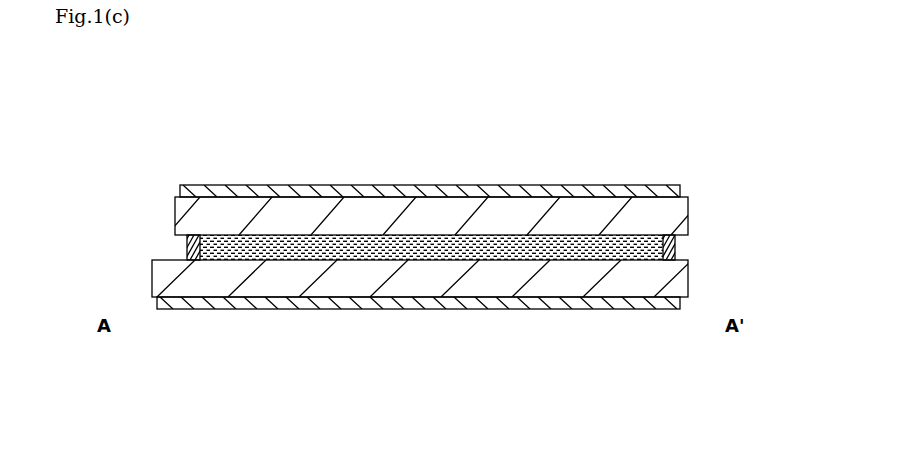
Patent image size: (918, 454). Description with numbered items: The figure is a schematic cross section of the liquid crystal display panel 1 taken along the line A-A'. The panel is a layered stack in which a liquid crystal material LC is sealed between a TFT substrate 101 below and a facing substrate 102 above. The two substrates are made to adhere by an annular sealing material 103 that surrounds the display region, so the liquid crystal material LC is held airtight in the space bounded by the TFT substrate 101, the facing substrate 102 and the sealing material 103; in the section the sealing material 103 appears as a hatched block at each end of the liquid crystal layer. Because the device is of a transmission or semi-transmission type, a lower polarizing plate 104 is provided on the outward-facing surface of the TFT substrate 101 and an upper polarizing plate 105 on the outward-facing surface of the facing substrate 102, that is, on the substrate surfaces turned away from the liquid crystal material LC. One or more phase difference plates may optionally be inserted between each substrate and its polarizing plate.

The liquid crystal display panel 1 is at (428, 266).
The TFT substrate 101 is at (413, 278).
The facing substrate 102 is at (382, 217).
The sealing material 103 is at (185, 248).
The lower polarizing plate 104 is at (248, 303).
The upper polarizing plate 105 is at (262, 191).
The liquid crystal material LC is at (548, 248).